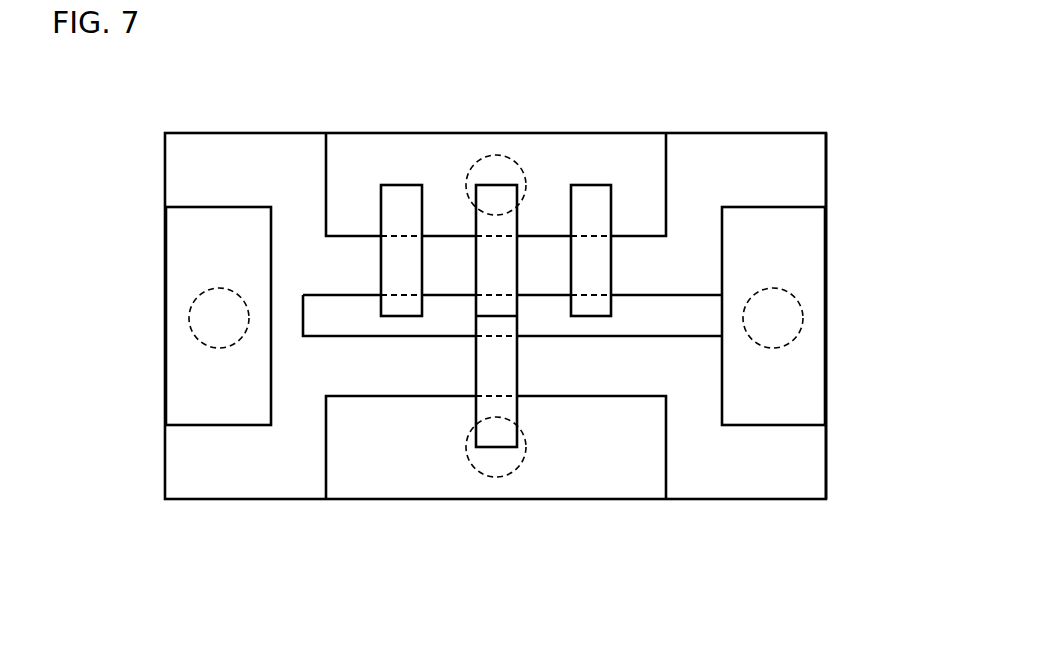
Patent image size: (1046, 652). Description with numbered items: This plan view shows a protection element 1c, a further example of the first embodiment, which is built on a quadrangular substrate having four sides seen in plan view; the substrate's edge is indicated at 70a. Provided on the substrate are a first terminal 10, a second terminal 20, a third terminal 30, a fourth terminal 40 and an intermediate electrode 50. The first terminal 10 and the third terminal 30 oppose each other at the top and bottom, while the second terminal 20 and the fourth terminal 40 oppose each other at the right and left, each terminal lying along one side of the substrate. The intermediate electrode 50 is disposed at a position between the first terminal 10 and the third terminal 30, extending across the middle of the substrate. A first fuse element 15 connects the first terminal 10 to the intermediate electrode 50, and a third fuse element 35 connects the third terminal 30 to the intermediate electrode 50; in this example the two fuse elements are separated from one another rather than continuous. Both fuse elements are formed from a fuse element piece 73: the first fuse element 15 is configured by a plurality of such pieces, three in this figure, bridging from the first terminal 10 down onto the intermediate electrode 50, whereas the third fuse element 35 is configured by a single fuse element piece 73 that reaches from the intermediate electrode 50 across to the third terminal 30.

The protection element 1c is at (815, 92).
The first terminal 10 is at (338, 131).
The first fuse element 15 is at (613, 66).
The second terminal 20 is at (828, 243).
The third terminal 30 is at (632, 502).
The third fuse element 35 is at (477, 403).
The fourth terminal 40 is at (165, 390).
The intermediate electrode 50 is at (692, 327).
The outer edge 70a is at (815, 168).
The fuse element piece 73 is at (402, 185).